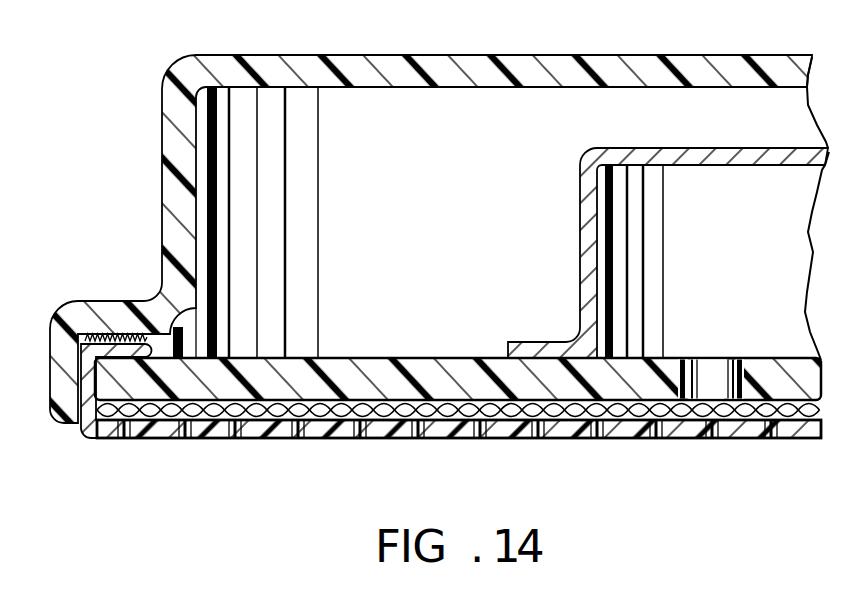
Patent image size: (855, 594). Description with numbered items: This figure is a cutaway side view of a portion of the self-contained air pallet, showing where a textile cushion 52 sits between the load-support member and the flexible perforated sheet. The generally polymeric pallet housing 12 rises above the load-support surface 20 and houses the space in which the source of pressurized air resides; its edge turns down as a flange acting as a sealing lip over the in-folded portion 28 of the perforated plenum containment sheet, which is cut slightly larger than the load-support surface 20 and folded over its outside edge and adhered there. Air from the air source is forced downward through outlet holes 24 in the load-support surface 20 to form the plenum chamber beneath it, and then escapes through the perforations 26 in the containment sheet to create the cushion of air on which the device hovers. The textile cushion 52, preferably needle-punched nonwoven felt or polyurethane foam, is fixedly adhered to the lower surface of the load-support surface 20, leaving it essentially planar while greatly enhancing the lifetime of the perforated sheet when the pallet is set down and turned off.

The self-contained pallet housing 12 is at (190, 77).
The load-support surface 20 is at (342, 378).
The outlet holes 24 is at (708, 377).
The perforations 26 is at (180, 440).
The in-folded portion of the sheet 28 is at (107, 351).
The textile cushion 52 is at (265, 432).